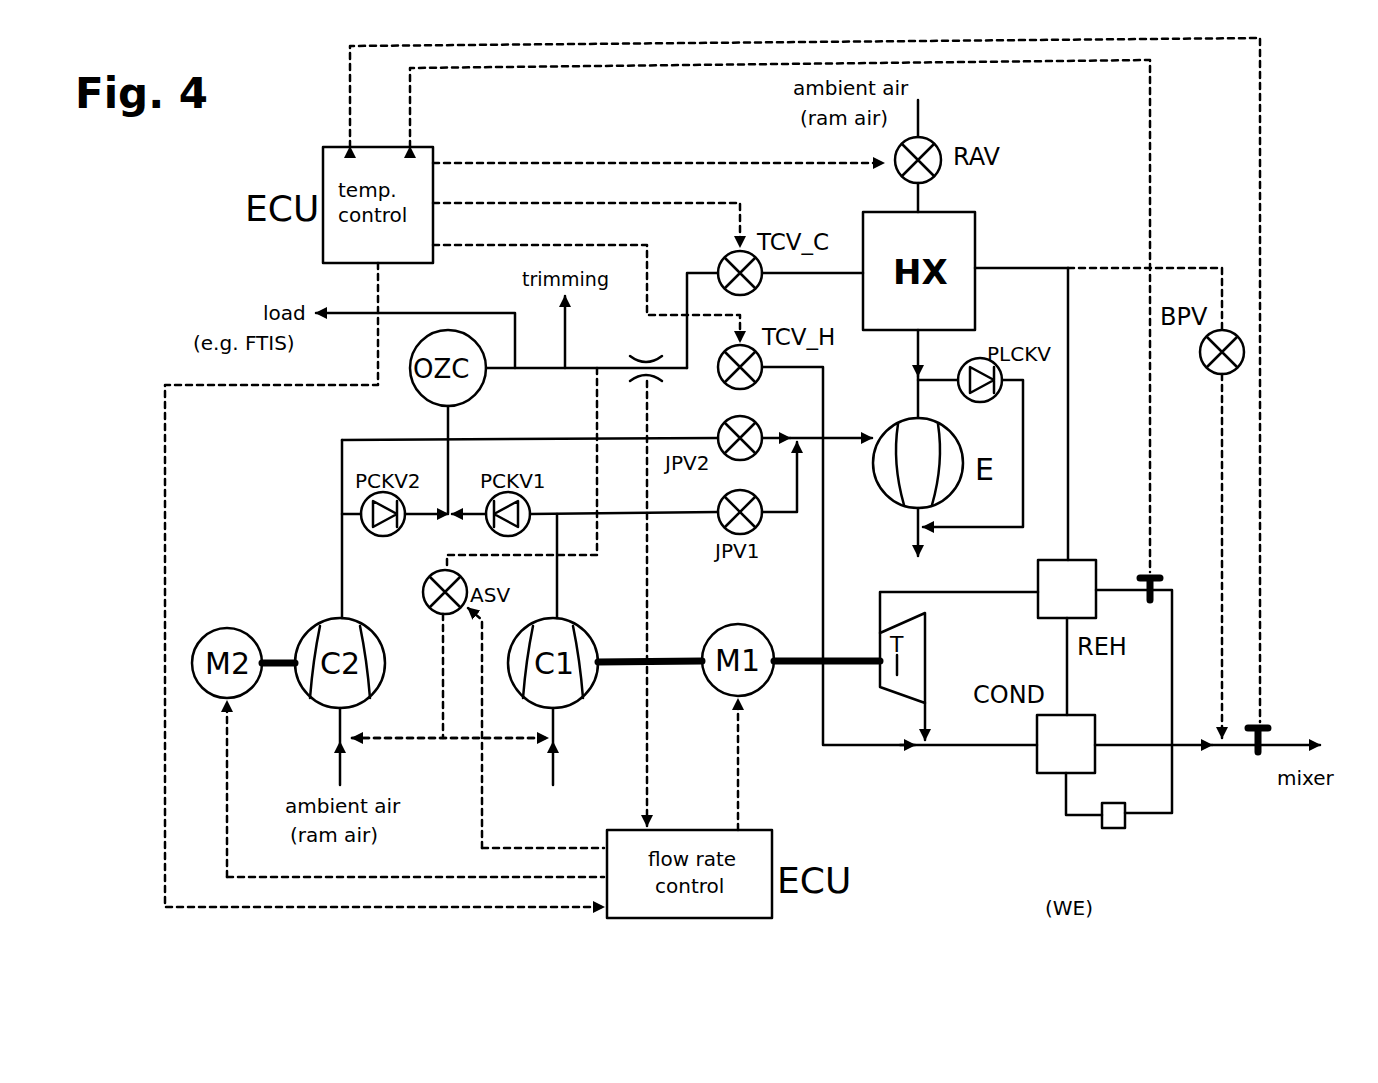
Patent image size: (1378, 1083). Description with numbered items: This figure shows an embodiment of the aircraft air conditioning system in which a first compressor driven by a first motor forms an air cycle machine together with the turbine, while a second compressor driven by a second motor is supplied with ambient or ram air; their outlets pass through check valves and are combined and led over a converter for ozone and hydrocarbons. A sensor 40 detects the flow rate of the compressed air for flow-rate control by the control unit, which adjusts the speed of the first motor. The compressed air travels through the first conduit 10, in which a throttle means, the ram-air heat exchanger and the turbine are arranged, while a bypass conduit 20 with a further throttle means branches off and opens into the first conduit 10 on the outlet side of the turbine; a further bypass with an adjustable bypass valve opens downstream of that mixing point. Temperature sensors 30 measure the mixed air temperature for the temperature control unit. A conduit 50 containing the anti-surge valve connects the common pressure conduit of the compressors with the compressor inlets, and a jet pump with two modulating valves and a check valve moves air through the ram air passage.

The first conduit 10 is at (1021, 262).
The bypass conduit 20 is at (899, 556).
The temperature sensor 30 is at (1160, 571).
The sensor 40 is at (645, 355).
The conduit 50 is at (590, 553).